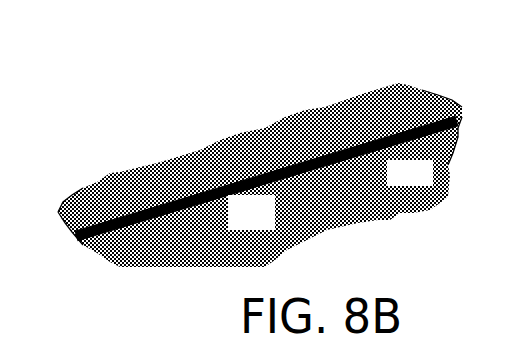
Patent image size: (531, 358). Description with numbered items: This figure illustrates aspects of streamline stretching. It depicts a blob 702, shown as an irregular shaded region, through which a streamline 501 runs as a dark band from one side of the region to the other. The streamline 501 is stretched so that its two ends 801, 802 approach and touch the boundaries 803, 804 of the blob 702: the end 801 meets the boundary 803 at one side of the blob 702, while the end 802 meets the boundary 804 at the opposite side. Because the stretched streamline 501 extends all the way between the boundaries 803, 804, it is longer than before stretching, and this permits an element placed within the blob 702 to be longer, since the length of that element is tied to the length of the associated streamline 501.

The streamline 501 is at (287, 181).
The blob 702 is at (405, 213).
The end 801 is at (455, 126).
The end 802 is at (73, 237).
The boundary 803 is at (455, 102).
The boundary 804 is at (72, 231).